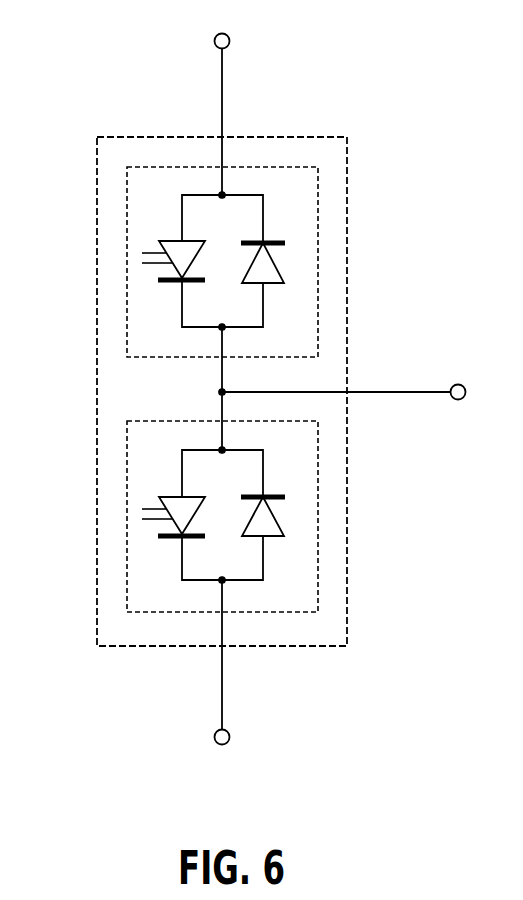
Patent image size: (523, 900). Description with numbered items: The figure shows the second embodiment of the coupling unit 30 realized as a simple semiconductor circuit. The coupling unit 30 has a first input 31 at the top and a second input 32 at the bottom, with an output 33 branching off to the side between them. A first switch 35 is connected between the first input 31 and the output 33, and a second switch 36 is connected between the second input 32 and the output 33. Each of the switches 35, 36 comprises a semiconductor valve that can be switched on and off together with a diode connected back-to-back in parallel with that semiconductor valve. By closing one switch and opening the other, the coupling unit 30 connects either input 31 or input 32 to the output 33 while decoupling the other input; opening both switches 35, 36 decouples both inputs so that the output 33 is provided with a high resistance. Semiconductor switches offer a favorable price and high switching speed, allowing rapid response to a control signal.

The coupling unit 30 is at (348, 190).
The first input 31 is at (230, 36).
The second input 32 is at (230, 734).
The output 33 is at (456, 384).
The first switch 35 is at (127, 244).
The second switch 36 is at (127, 518).